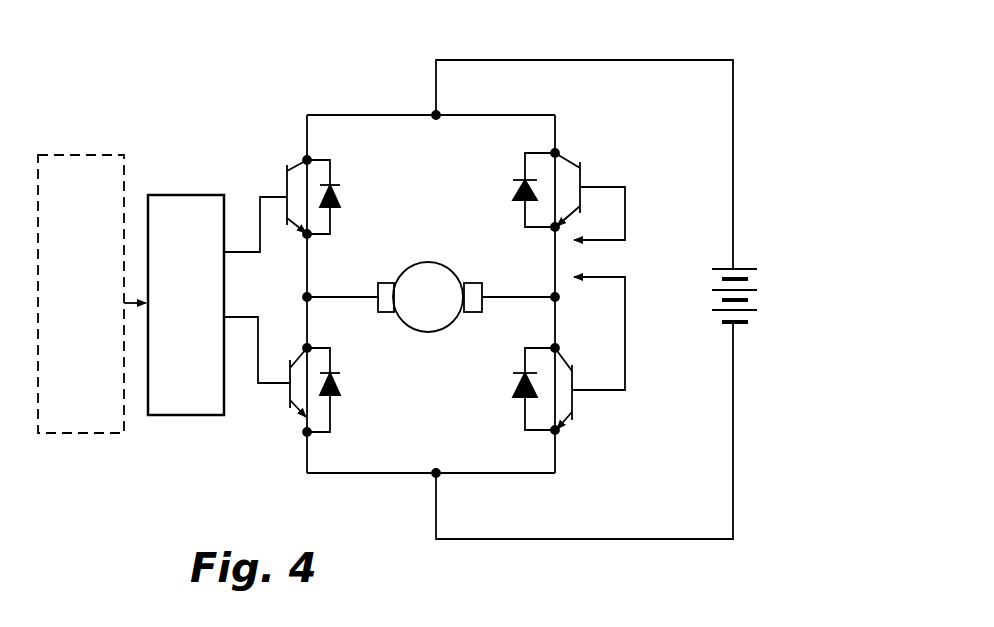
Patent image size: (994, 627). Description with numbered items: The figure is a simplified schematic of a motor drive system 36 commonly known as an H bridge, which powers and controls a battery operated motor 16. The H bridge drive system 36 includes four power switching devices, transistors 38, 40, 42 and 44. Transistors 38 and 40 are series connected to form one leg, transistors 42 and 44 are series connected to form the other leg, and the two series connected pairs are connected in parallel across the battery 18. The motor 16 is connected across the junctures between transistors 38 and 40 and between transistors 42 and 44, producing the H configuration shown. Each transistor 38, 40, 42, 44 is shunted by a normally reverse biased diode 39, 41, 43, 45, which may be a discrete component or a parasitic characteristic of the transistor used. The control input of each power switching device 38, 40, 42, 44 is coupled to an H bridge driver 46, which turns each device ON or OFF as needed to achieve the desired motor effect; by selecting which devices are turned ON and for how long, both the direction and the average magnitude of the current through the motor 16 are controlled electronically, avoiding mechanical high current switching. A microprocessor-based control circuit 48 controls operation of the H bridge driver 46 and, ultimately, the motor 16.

The motor 16 is at (437, 262).
The battery 18 is at (752, 268).
The motor drive system 36 is at (352, 82).
The transistor 38 is at (286, 177).
The diode 39 is at (341, 197).
The transistor 40 is at (291, 403).
The diode 41 is at (343, 378).
The transistor 42 is at (586, 181).
The diode 43 is at (516, 195).
The transistor 44 is at (577, 405).
The diode 45 is at (517, 395).
The H bridge driver 46 is at (165, 408).
The microprocessor-based control circuit 48 is at (62, 433).